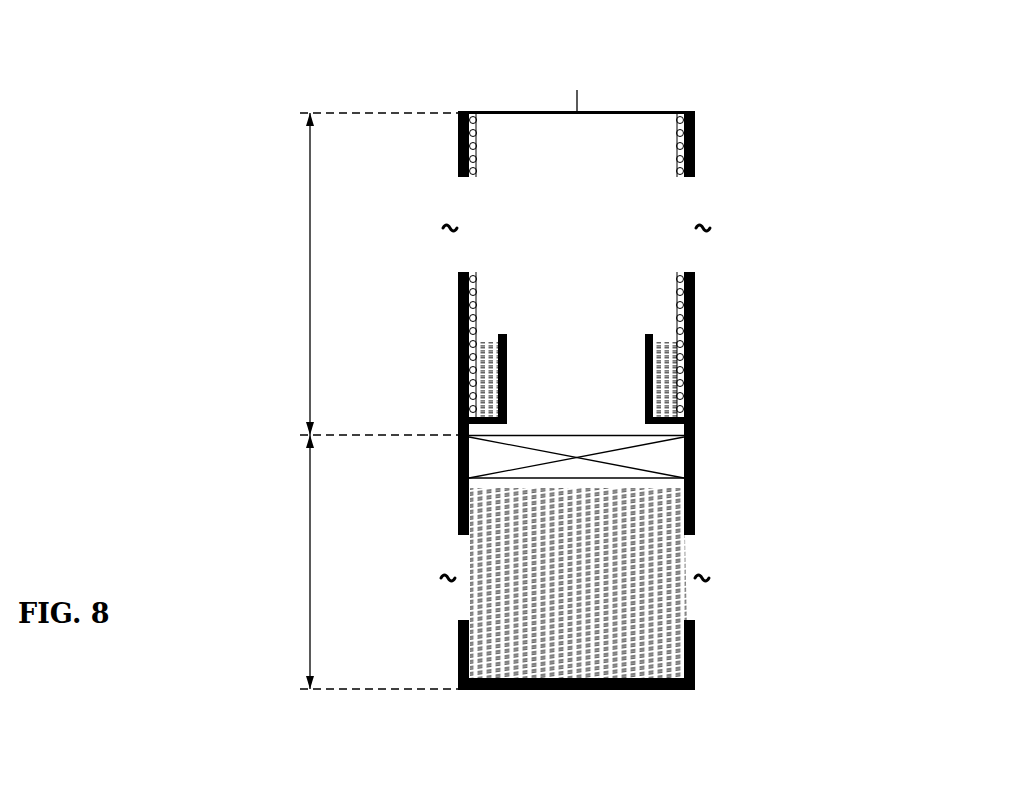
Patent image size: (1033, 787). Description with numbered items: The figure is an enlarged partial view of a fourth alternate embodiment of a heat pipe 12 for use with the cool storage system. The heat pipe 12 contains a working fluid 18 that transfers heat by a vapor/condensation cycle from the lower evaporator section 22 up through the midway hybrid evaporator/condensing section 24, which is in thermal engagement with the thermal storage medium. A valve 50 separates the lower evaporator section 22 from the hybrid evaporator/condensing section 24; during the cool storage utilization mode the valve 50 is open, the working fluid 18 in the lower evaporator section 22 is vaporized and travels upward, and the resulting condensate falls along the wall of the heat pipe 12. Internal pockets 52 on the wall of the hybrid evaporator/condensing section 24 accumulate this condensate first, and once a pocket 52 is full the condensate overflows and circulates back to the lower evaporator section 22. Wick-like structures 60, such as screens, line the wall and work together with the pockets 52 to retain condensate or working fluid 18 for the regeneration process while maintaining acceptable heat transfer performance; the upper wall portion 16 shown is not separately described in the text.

The heat pipe 12 is at (786, 238).
The cladding tube upper section 16 is at (691, 112).
The working fluid 18 is at (667, 657).
The lower evaporator section 22 is at (460, 645).
The hybrid evaporator/condensing section 24 is at (460, 324).
The valve 50 is at (675, 453).
The internal pocket 52 is at (508, 357).
The wick-like structure 60 is at (478, 130).